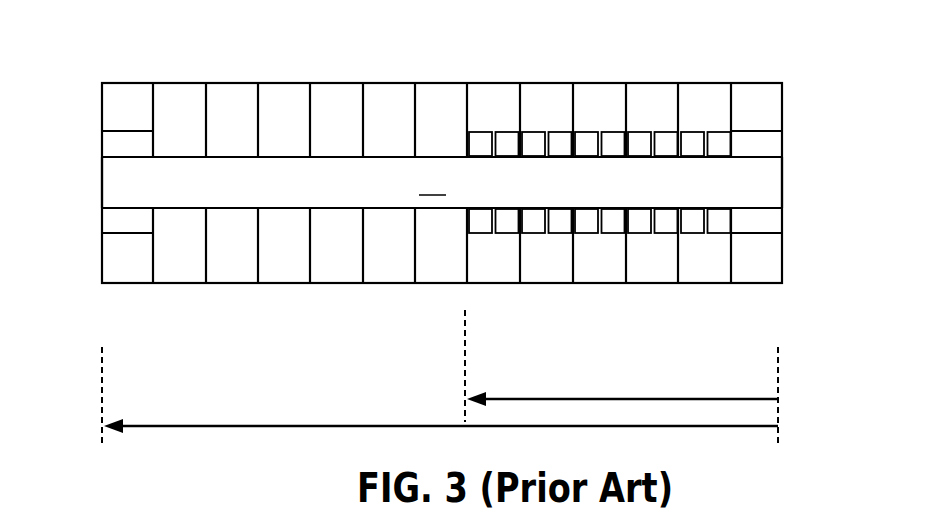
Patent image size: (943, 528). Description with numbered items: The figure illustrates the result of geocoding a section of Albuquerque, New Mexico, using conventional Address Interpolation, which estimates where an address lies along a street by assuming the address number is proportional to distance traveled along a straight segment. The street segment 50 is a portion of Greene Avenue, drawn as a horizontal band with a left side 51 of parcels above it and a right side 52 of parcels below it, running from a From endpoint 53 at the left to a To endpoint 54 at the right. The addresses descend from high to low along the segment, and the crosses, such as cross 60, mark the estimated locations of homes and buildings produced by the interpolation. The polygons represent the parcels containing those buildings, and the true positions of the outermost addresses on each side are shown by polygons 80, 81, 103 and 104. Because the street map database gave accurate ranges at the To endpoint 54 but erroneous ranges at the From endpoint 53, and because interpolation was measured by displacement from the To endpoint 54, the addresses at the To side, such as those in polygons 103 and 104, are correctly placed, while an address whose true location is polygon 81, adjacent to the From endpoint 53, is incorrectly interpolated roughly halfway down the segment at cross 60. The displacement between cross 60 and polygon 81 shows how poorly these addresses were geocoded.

The street segment 50 is at (433, 184).
The left side 51 is at (442, 100).
The right side 52 is at (442, 267).
The From endpoint 53 is at (108, 191).
The To endpoint 54 is at (787, 177).
The cross (geocoded address) 60 is at (600, 267).
The polygon 80 is at (127, 95).
The polygon 81 is at (137, 274).
The polygon 103 is at (767, 273).
The polygon 104 is at (748, 92).